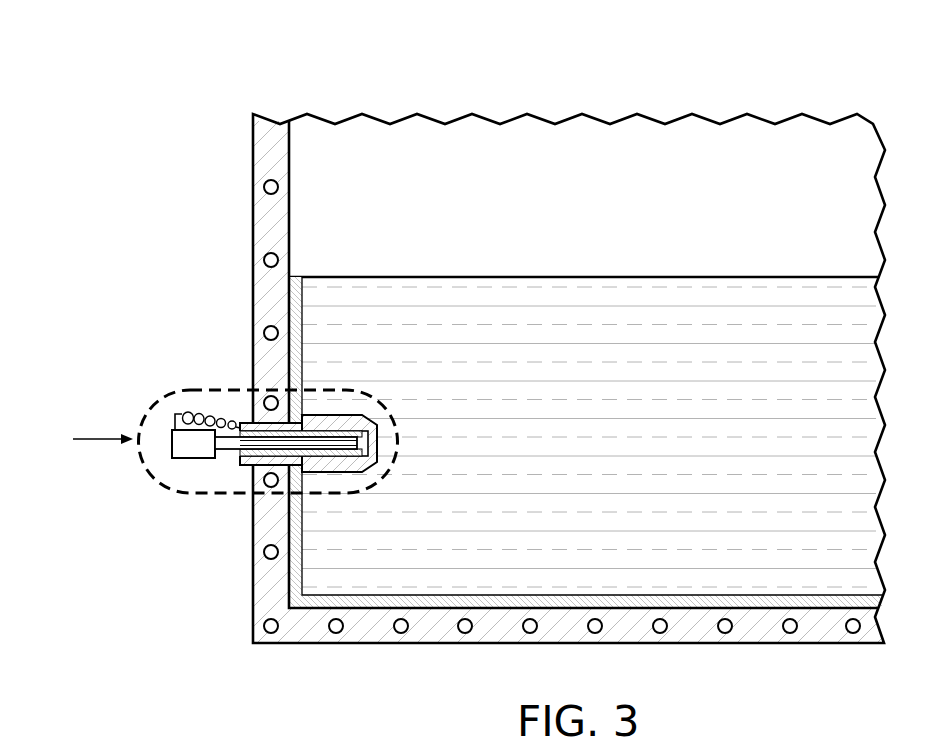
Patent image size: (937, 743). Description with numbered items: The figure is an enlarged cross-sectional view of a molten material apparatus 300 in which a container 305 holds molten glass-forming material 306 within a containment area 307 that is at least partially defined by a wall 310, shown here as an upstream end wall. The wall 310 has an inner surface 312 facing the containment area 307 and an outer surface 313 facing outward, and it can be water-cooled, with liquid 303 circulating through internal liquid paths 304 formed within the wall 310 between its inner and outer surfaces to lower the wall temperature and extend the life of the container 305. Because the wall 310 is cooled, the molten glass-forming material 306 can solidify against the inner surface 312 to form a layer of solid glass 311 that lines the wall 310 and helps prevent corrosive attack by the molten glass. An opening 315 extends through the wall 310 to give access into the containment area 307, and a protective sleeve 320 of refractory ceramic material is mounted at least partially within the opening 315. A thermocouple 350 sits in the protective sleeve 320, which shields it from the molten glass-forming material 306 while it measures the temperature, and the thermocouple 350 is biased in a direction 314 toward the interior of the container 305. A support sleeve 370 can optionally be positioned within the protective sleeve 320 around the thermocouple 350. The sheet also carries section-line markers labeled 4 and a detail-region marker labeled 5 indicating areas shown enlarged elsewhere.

The molten material apparatus 300 is at (146, 219).
The liquid 303 is at (264, 260).
The internal liquid paths 304 is at (594, 626).
The container 305 is at (699, 138).
The molten glass-forming material 306 is at (616, 287).
The containment area 307 is at (522, 228).
The wall 310 is at (262, 222).
The layer of solid glass 311 is at (292, 281).
The inner surface 312 is at (290, 187).
The outer surface 313 is at (252, 188).
The direction 314 is at (92, 441).
The opening 315 is at (270, 458).
The protective sleeve 320 is at (363, 421).
The thermocouple 350 is at (365, 444).
The support sleeve 370 is at (327, 457).
The section line 4- 4 is at (247, 52).
The detail region 5 is at (187, 495).